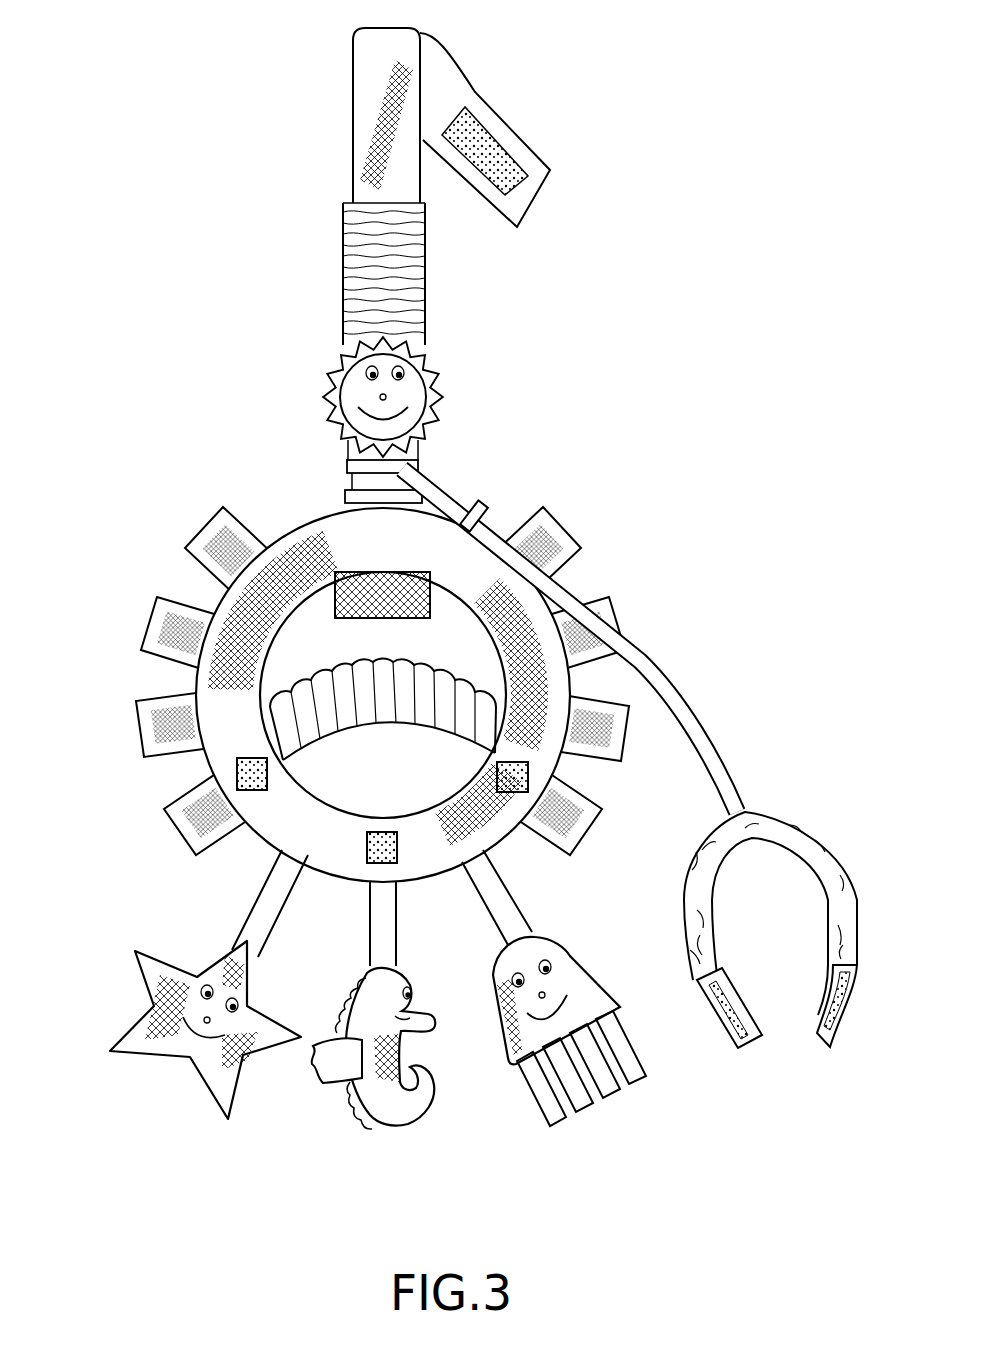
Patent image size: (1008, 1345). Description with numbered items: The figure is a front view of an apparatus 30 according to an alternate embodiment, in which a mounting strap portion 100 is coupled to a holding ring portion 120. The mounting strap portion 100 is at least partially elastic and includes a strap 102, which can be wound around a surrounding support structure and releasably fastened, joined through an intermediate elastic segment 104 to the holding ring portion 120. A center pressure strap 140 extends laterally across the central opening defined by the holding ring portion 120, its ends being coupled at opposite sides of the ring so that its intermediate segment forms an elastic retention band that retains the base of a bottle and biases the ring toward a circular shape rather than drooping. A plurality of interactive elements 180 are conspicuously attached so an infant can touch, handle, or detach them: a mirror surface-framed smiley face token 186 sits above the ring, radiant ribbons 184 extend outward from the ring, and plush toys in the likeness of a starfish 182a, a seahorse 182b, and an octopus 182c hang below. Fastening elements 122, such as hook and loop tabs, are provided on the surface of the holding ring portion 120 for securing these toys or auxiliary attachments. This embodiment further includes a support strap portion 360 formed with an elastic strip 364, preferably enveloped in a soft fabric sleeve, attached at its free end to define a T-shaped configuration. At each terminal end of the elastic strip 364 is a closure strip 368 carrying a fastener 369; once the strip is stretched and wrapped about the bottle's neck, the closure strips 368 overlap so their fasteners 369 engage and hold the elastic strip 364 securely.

The apparatus 30 is at (697, 59).
The mounting strap portion 100 is at (343, 282).
The strap 102 is at (353, 92).
The intermediate elastic segment 104 is at (425, 283).
The smiley face token 186 is at (442, 385).
The holding ring portion 120 is at (303, 533).
The radiant ribbons 184 is at (203, 530).
The fastening elements 122 is at (237, 765).
The center pressure strap 140 is at (381, 707).
The support strap portion 360 is at (687, 705).
The elastic strip 364 is at (817, 855).
The closure strip 368 is at (820, 1013).
The fastener 369 is at (735, 1037).
The interactive elements 180 is at (110, 1082).
The starfish 182a is at (172, 1050).
The seahorse 182b is at (400, 1125).
The octopus 182c is at (513, 1067).